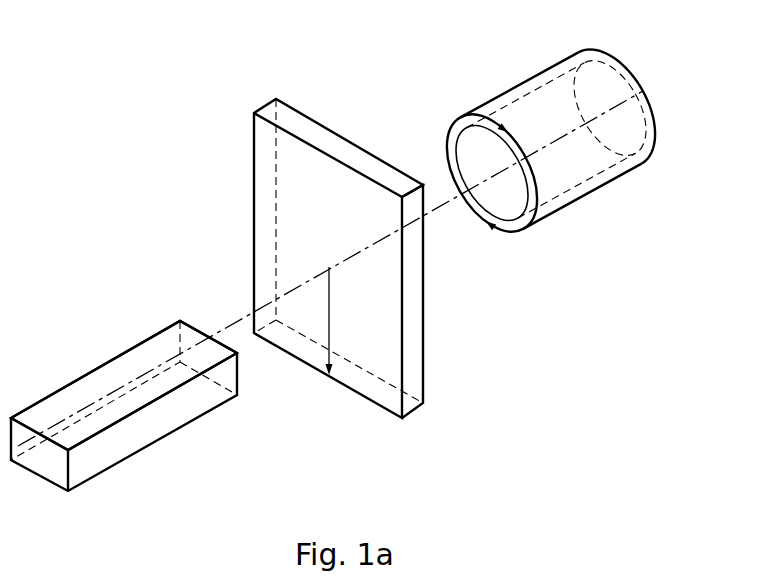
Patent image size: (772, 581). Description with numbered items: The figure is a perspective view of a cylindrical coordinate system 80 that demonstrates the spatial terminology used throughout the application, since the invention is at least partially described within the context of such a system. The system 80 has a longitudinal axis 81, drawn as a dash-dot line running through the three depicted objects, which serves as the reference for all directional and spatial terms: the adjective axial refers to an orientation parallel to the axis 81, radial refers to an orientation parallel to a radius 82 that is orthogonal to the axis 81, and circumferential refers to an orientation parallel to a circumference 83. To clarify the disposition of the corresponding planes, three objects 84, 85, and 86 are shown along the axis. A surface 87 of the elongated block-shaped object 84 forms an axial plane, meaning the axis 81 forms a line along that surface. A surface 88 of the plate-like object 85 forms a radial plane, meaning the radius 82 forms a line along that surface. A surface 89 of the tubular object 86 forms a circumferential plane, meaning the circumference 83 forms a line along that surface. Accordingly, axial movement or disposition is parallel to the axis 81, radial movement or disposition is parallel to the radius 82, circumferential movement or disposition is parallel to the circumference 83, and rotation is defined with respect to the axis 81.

The cylindrical coordinate system 80 is at (203, 138).
The longitudinal axis 81 is at (638, 88).
The radius 82 is at (329, 315).
The circumference 83 is at (447, 138).
The object 84 is at (92, 478).
The object 85 is at (440, 412).
The object 86 is at (581, 213).
The surface 87 is at (87, 388).
The surface 88 is at (267, 220).
The surface 89 is at (515, 86).